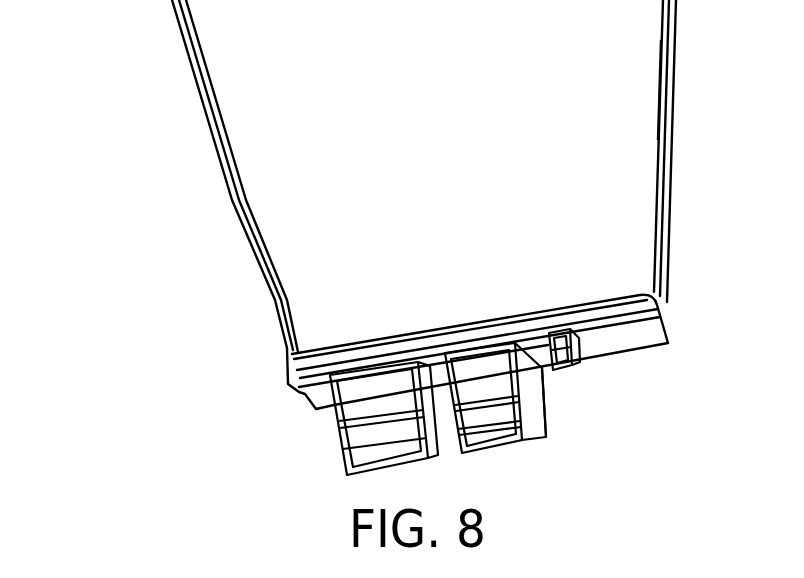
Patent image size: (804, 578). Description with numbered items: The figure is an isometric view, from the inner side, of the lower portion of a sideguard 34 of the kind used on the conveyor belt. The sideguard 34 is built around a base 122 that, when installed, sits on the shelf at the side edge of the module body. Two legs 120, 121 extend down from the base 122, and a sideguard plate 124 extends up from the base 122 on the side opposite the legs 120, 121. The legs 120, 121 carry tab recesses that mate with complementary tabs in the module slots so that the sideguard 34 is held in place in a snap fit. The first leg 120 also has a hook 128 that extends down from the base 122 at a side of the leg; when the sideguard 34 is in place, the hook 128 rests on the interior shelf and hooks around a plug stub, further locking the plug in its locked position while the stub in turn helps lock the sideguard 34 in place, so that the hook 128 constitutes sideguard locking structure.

The sideguard 34 is at (148, 44).
The first leg 120 is at (492, 437).
The second leg 121 is at (392, 438).
The base 122 is at (640, 323).
The sideguard plate 124 is at (622, 117).
The hook 128 is at (567, 360).